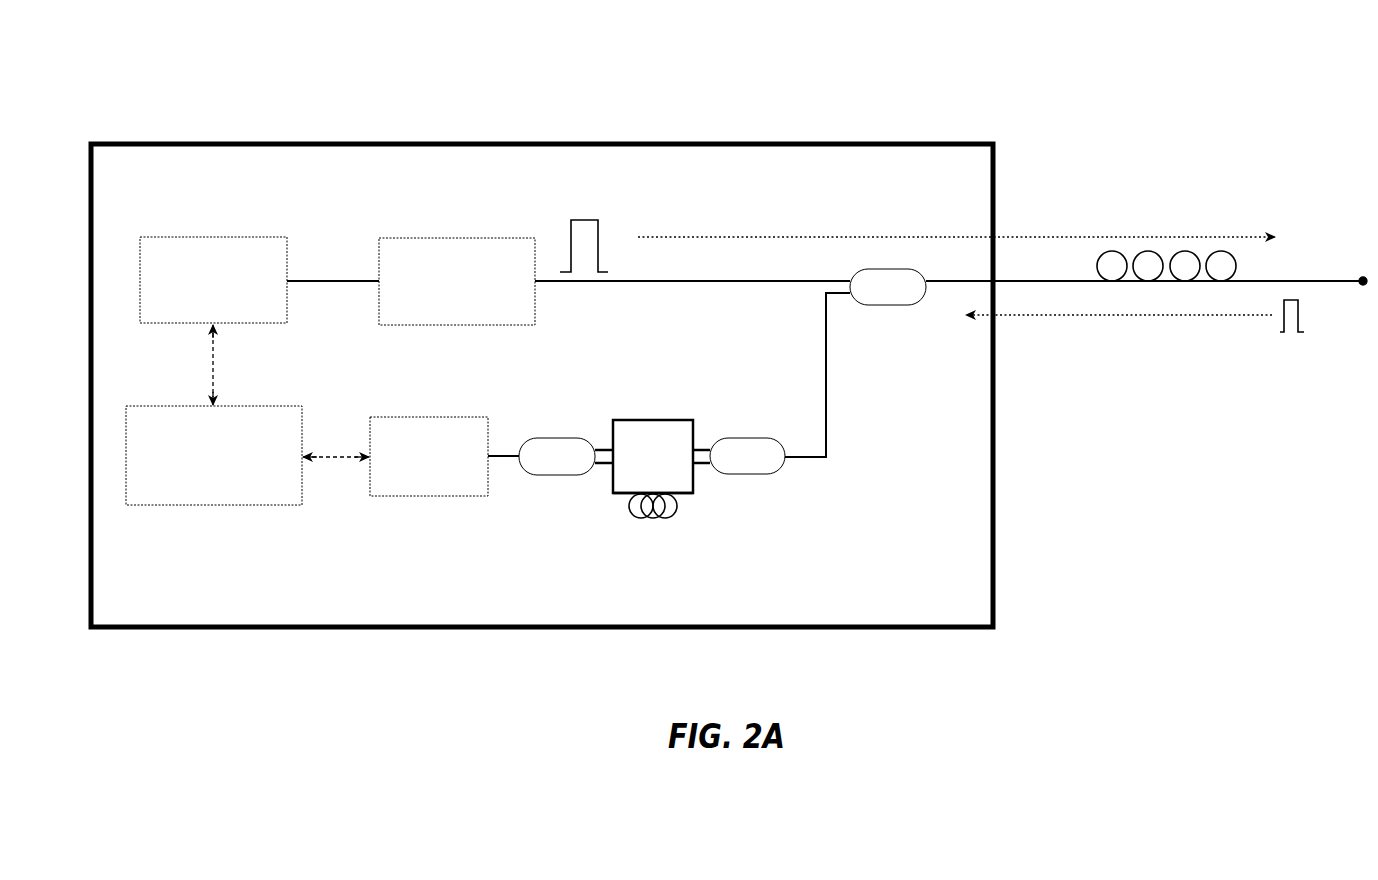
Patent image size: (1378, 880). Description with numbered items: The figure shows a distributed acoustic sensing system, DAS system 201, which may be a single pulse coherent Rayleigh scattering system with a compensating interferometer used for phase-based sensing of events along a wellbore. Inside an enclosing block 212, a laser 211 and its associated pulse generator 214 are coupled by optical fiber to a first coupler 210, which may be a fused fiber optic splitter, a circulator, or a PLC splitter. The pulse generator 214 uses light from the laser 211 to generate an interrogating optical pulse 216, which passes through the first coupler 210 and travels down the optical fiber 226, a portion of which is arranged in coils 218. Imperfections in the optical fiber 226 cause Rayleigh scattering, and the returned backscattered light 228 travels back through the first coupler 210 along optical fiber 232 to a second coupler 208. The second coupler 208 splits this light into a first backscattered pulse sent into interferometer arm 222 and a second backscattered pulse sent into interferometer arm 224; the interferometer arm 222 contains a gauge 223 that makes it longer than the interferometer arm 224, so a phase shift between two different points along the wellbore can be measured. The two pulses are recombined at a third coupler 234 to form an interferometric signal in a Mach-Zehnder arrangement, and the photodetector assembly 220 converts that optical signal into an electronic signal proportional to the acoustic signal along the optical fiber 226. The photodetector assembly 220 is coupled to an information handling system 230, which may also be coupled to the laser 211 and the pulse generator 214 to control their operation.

The DAS system 201 is at (1120, 42).
The housing / interrogator enclosure 212 is at (676, 138).
The laser 211 is at (213, 280).
The pulse generator 214 is at (457, 281).
The interrogating optical pulse 216 is at (603, 212).
The first coupler 210 is at (908, 266).
The coils 218 is at (1165, 250).
The optical fiber 226 is at (1300, 270).
The backscattered light 228 is at (1300, 342).
The optical fiber 232 is at (832, 383).
The second coupler 208 is at (752, 434).
The interferometer arm 224 is at (693, 418).
The interferometer arm 222 is at (694, 497).
The gauge 223 is at (636, 520).
The third coupler 234 is at (540, 430).
The photodetector assembly 220 is at (429, 456).
The information handling system 230 is at (214, 455).